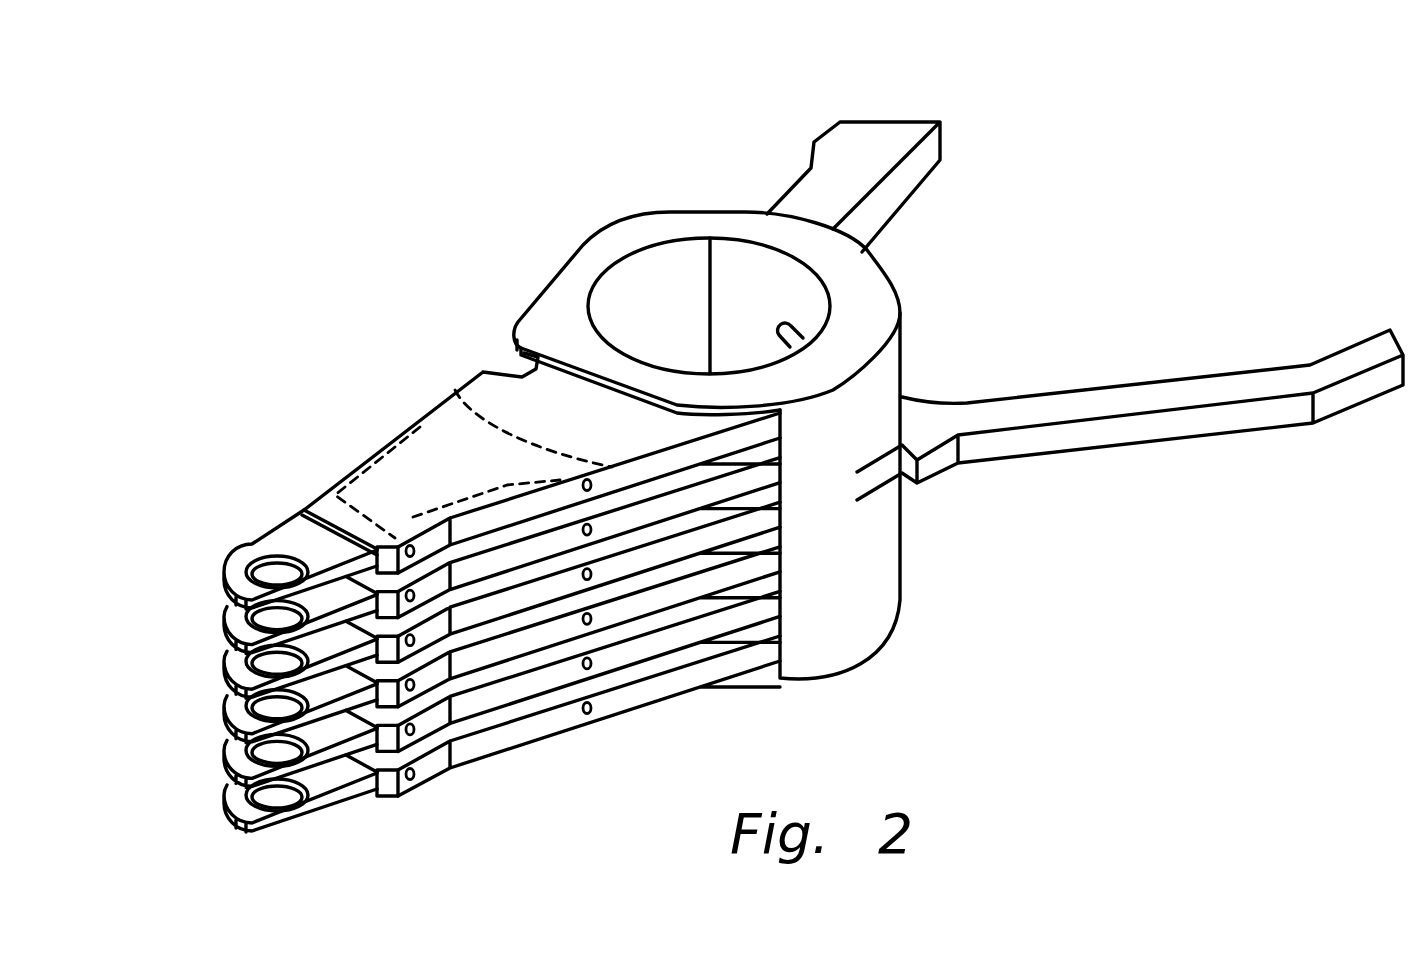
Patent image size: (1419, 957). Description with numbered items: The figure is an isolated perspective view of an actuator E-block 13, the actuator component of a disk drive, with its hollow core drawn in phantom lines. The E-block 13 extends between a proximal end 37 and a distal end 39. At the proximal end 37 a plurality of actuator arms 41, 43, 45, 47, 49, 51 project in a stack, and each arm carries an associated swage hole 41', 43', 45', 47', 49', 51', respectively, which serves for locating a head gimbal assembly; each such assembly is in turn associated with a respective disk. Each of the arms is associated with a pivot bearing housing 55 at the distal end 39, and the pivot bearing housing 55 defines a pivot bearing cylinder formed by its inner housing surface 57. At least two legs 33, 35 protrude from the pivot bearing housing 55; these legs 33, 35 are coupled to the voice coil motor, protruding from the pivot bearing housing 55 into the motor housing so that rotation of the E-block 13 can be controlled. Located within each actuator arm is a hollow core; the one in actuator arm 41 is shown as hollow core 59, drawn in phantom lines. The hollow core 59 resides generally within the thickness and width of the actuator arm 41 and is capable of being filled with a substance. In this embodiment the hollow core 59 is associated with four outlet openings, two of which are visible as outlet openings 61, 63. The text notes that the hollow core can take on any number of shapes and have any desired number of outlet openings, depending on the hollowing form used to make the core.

The E-block 13 is at (388, 284).
The leg 33 is at (897, 132).
The leg 35 is at (1123, 432).
The proximal end 37 is at (232, 515).
The distal end 39 is at (905, 530).
The actuator arm 41 is at (458, 481).
The actuator arm 43 is at (458, 552).
The actuator arm 45 is at (458, 618).
The actuator arm 47 is at (458, 661).
The actuator arm 49 is at (458, 698).
The actuator arm 51 is at (458, 734).
The swage hole 41' is at (222, 575).
The swage hole 43' is at (222, 620).
The swage hole 45' is at (222, 664).
The swage hole 47' is at (222, 709).
The swage hole 49' is at (222, 753).
The swage hole 51' is at (222, 798).
The pivot bearing housing 55 is at (883, 397).
The inner housing surface 57 is at (643, 273).
The hollow core 59 is at (442, 460).
The outlet opening 61 is at (589, 479).
The outlet opening 63 is at (409, 544).